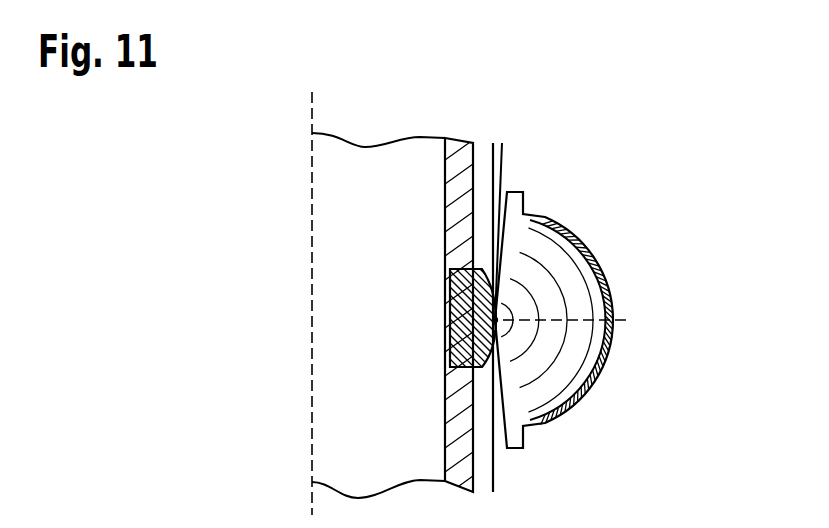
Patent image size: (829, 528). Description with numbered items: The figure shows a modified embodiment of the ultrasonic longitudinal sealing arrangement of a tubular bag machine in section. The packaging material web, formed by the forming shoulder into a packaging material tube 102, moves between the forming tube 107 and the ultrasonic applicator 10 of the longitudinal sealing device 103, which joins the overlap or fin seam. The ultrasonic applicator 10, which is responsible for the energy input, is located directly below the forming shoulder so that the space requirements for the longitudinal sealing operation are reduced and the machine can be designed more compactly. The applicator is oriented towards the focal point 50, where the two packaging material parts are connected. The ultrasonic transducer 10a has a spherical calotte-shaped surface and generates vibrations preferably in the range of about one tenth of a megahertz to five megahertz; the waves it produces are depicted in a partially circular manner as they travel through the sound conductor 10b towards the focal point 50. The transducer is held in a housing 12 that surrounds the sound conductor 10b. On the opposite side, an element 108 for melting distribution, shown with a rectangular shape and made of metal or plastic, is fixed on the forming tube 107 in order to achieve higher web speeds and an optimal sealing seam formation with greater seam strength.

The ultrasonic applicator 10 is at (636, 291).
The ultrasonic transducer 10a is at (588, 243).
The sound conductor 10b is at (577, 308).
The lens housing 12 is at (513, 203).
The focal point 50 is at (493, 318).
The packaging material tube 102 is at (490, 198).
The longitudinal sealing device 103 is at (530, 373).
The forming tube 107 is at (460, 220).
The element for melting distribution 108 is at (465, 288).